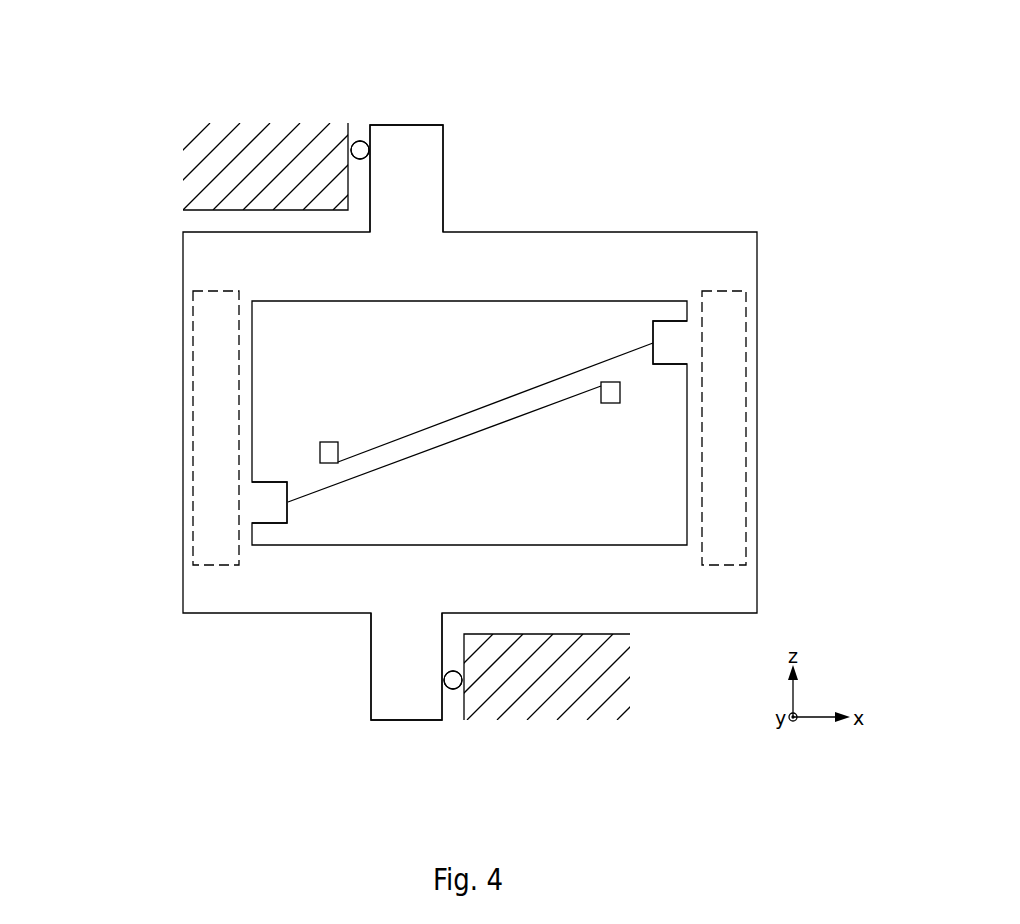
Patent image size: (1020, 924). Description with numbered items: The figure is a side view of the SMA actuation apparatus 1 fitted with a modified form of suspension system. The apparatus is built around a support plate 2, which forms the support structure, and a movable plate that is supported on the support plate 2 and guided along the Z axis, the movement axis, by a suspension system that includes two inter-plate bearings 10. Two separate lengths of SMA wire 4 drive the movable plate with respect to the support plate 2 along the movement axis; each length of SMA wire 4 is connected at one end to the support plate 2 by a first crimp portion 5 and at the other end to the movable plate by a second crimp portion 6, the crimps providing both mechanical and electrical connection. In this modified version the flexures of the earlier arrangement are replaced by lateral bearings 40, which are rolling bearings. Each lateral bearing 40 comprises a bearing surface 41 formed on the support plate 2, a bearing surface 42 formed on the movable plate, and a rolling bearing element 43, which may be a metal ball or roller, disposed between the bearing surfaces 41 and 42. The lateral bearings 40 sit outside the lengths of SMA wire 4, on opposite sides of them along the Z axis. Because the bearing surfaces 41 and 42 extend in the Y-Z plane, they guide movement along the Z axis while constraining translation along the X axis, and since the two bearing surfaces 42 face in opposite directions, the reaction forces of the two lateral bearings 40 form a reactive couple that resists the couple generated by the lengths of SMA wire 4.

The SMA actuation apparatus 1 is at (96, 405).
The support plate 2 is at (265, 170).
The SMA wire 4 is at (560, 377).
The first crimp portion 5 is at (320, 452).
The second crimp portion 6 is at (272, 512).
The inter-plate bearing 10 is at (193, 347).
The lateral bearing 40 is at (372, 96).
The bearing surface 41 is at (348, 187).
The bearing surface 42 is at (375, 168).
The rolling bearing element 43 is at (360, 141).